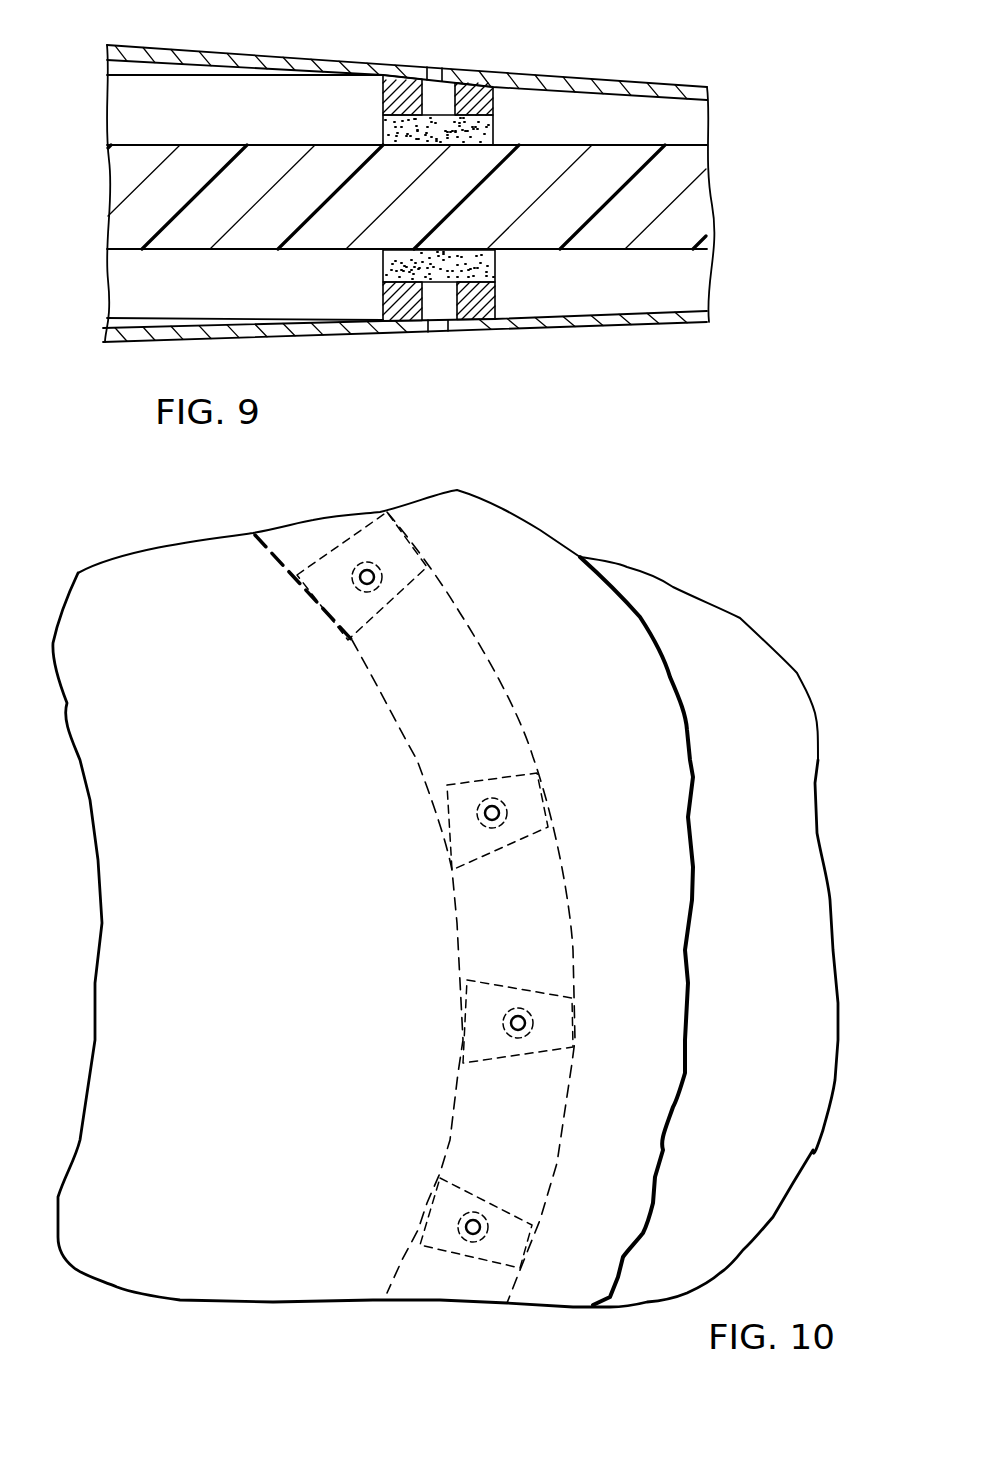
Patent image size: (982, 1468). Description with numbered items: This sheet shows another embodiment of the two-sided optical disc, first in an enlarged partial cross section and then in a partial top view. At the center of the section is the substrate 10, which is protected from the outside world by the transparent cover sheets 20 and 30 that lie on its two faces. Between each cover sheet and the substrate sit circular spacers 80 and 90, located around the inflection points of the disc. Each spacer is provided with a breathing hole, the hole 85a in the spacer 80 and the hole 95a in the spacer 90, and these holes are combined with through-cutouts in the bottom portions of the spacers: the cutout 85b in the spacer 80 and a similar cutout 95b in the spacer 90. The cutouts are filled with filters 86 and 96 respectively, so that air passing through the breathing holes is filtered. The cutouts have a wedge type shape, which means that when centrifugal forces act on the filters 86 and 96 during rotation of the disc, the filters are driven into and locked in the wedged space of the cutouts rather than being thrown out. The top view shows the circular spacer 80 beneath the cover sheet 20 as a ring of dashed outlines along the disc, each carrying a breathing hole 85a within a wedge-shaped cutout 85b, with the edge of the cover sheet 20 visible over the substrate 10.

In FIG. 9, the substrate 10 is at (700, 203).
In FIG. 10, the substrate 10 is at (783, 853).
In FIG. 9, the transparent cover sheet 20 is at (658, 81).
In FIG. 10, the transparent cover sheet 20 is at (623, 623).
In FIG. 9, the transparent cover sheet 30 is at (605, 325).
In FIG. 9, the circular spacer 80 is at (506, 109).
In FIG. 10, the circular spacer 80 is at (483, 650).
In FIG. 9, the breathing hole 85a is at (442, 93).
In FIG. 10, the breathing hole 85a is at (458, 1229).
In FIG. 10, the through-cutout 85b is at (432, 1182).
In FIG. 9, the filter 86 is at (390, 126).
In FIG. 9, the circular spacer 90 is at (510, 304).
In FIG. 9, the breathing hole 95a is at (416, 322).
In FIG. 9, the through-cutout 95b is at (490, 268).
In FIG. 9, the filter 96 is at (383, 268).